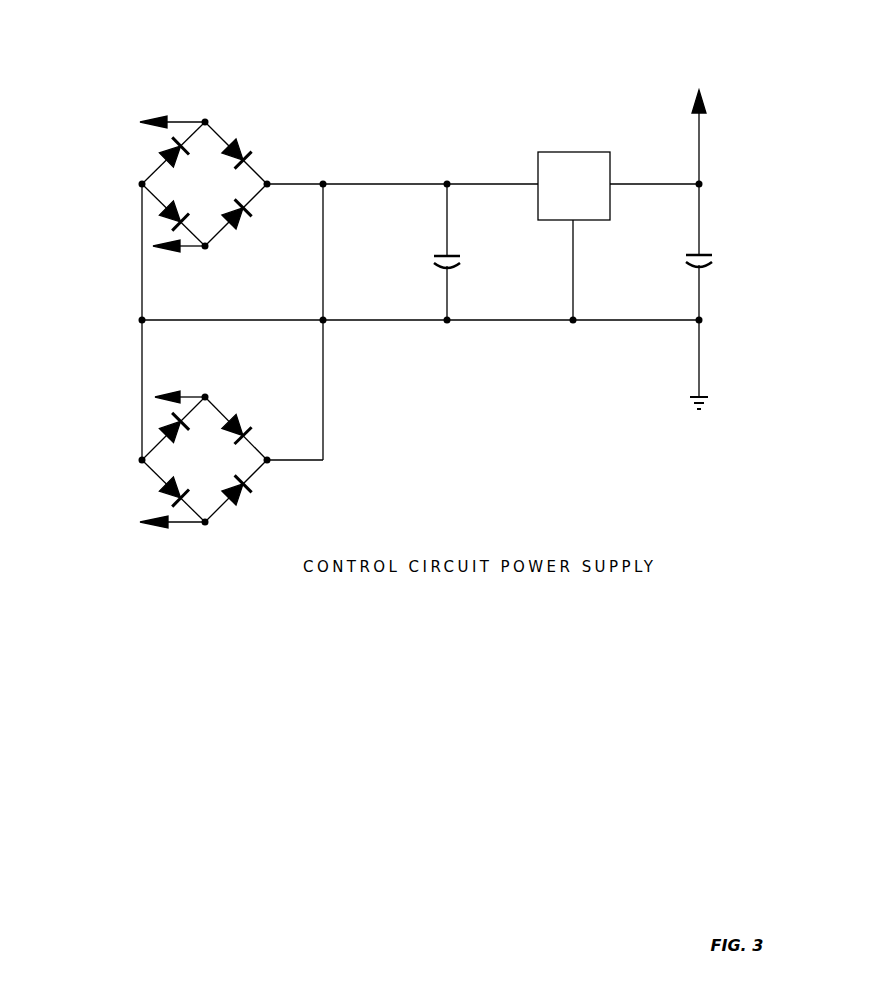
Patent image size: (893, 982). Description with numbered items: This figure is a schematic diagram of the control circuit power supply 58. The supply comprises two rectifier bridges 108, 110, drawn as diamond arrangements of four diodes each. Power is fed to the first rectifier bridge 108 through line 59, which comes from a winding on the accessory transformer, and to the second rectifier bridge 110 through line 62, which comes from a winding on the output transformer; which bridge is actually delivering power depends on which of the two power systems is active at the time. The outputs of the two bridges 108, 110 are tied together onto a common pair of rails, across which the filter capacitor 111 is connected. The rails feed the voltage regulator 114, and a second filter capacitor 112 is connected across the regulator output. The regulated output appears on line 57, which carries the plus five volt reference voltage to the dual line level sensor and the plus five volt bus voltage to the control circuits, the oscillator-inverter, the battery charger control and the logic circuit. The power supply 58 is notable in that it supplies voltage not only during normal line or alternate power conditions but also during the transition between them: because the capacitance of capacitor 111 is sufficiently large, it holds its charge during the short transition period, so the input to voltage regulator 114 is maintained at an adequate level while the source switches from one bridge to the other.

The line 57 is at (702, 155).
The control circuit power supply 58 is at (474, 457).
The line 59 is at (137, 122).
The line 62 is at (135, 398).
The rectifier bridge 108 is at (247, 186).
The rectifier bridge 110 is at (247, 465).
The filter capacitor 111 is at (460, 263).
The filter capacitor 112 is at (717, 262).
The voltage regulator 114 is at (568, 160).